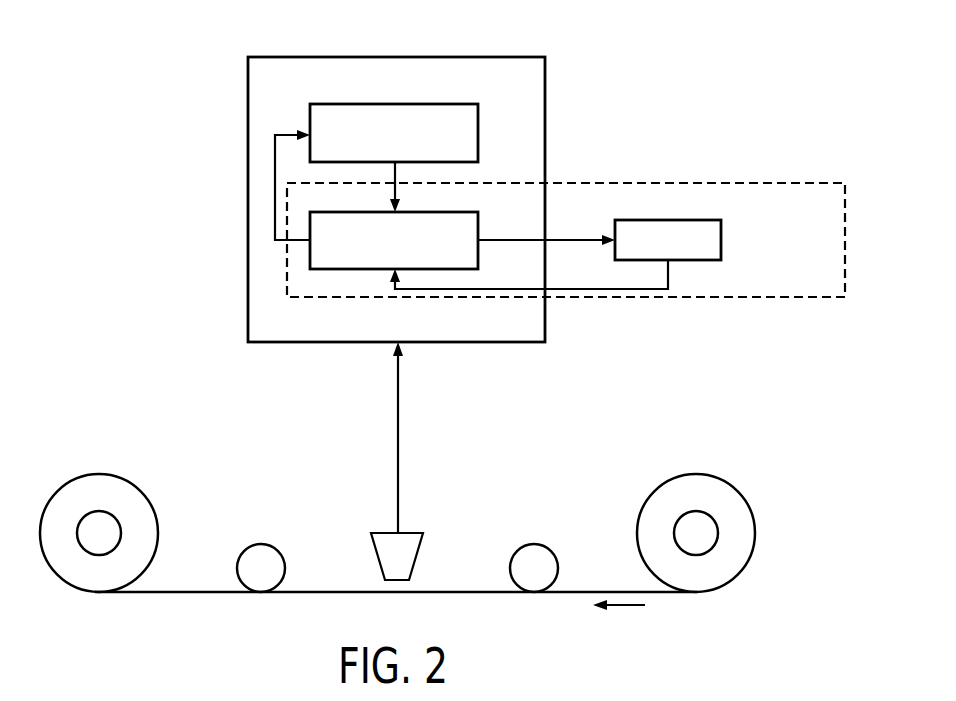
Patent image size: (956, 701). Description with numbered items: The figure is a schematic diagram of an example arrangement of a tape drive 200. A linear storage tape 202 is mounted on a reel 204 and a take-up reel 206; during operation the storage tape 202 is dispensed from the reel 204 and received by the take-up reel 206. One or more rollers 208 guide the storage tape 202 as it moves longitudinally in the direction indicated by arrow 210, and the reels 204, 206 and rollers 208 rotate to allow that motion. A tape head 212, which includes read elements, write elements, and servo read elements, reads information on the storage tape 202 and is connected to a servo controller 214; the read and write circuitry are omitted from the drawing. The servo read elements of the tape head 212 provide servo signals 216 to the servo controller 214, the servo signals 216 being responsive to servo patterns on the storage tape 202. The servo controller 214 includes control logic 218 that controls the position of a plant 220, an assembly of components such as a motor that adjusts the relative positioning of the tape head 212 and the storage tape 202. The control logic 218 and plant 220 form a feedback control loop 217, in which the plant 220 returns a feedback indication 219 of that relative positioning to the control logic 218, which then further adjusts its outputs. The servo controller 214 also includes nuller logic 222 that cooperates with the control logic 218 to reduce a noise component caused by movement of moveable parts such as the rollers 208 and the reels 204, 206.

The tape drive 200 is at (708, 82).
The storage tape 202 is at (165, 592).
The reel 204 is at (695, 474).
The take-up reel 206 is at (100, 475).
The roller 208 is at (261, 568).
The arrow 210 is at (625, 607).
The tape head 212 is at (405, 533).
The servo controller 214 is at (522, 57).
The servo signals 216 is at (398, 437).
The feedback control loop 217 is at (740, 297).
The control logic 218 is at (465, 212).
The feedback indication 219 is at (612, 289).
The plant 220 is at (721, 242).
The nuller logic 222 is at (465, 104).